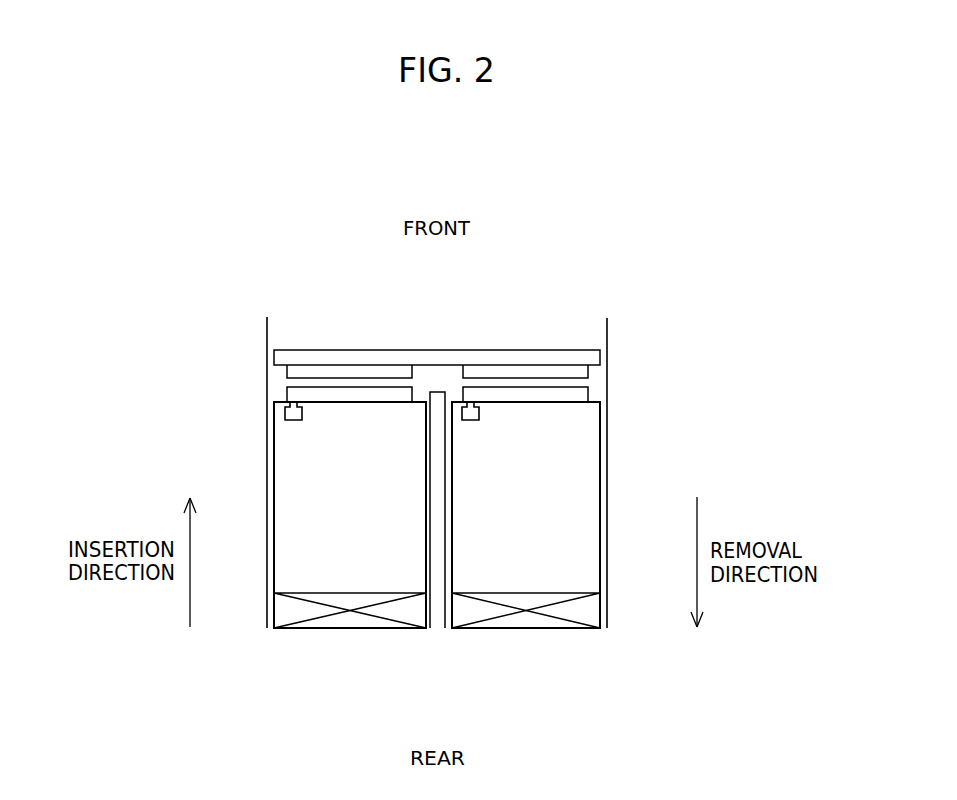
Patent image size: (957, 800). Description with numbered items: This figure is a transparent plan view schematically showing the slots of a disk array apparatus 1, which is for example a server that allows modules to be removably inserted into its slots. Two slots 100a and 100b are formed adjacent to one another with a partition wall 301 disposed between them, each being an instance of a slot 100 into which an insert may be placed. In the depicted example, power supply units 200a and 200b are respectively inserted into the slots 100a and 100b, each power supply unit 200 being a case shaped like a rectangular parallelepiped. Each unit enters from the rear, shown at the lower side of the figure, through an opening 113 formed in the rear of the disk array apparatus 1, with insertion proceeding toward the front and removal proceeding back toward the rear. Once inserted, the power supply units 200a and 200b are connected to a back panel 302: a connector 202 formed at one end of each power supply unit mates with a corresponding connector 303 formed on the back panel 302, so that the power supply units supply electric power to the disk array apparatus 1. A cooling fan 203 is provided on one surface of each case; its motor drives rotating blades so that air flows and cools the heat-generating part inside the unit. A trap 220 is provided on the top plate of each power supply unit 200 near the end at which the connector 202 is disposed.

The disk array apparatus 1 is at (691, 308).
The slot 100 is at (441, 456).
The slot 100a is at (283, 383).
The slot 100b is at (593, 380).
The opening 113 is at (353, 638).
The power supply unit 200 is at (440, 515).
The power supply unit 200a is at (303, 522).
The power supply unit 200b is at (580, 523).
The connector 202 is at (305, 395).
The cooling fan 203 is at (400, 608).
The trap 220 is at (301, 429).
The partition wall 301 is at (434, 402).
The back panel 302 is at (482, 358).
The connector 303 is at (352, 372).